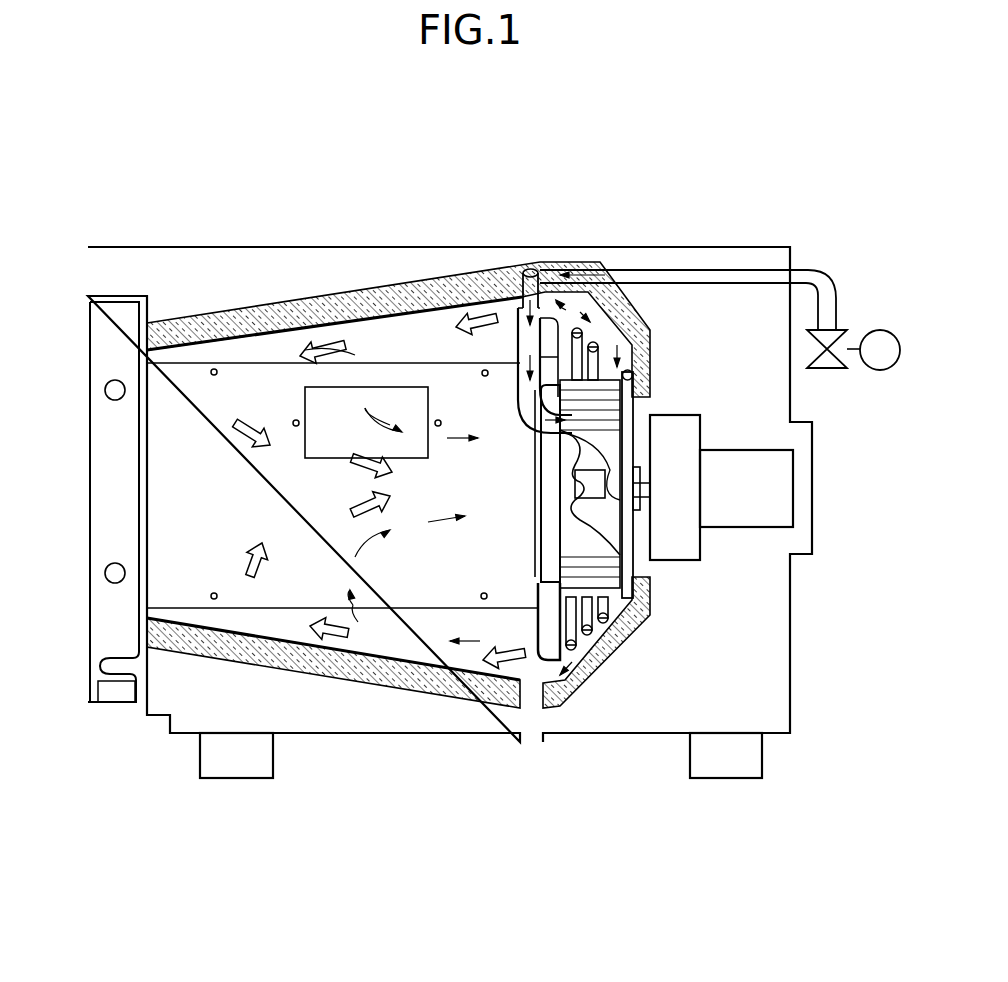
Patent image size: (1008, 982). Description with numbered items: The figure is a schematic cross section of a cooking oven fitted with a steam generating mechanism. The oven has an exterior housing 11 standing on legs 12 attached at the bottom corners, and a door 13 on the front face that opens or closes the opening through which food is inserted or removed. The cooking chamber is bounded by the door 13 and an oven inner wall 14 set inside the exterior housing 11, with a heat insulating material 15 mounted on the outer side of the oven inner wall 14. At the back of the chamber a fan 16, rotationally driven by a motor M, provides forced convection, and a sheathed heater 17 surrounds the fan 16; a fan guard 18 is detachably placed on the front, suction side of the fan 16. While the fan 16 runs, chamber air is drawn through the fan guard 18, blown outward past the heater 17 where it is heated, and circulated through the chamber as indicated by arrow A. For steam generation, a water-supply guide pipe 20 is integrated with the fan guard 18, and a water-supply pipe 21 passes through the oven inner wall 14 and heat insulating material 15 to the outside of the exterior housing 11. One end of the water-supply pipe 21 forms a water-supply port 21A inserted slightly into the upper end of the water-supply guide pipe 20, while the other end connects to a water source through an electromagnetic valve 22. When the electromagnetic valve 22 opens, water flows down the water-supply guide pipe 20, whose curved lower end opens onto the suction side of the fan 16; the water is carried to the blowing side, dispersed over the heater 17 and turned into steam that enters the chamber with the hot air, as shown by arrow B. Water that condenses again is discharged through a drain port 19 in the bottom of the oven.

The exterior housing 11 is at (300, 247).
The legs 12 is at (222, 778).
The door 13 is at (118, 305).
The oven inner wall 14 is at (400, 300).
The heat insulating material 15 is at (247, 318).
The fan 16 is at (630, 372).
The heater 17 is at (592, 338).
The fan guard 18 is at (535, 535).
The drain port 19 is at (548, 712).
The water-supply guide pipe 20 is at (513, 330).
The water-supply pipe 21 is at (712, 268).
The water-supply port 21A is at (525, 272).
The electromagnetic valve 22 is at (840, 330).
The motor M is at (790, 490).
The arrow A is at (236, 425).
The arrow B is at (364, 542).